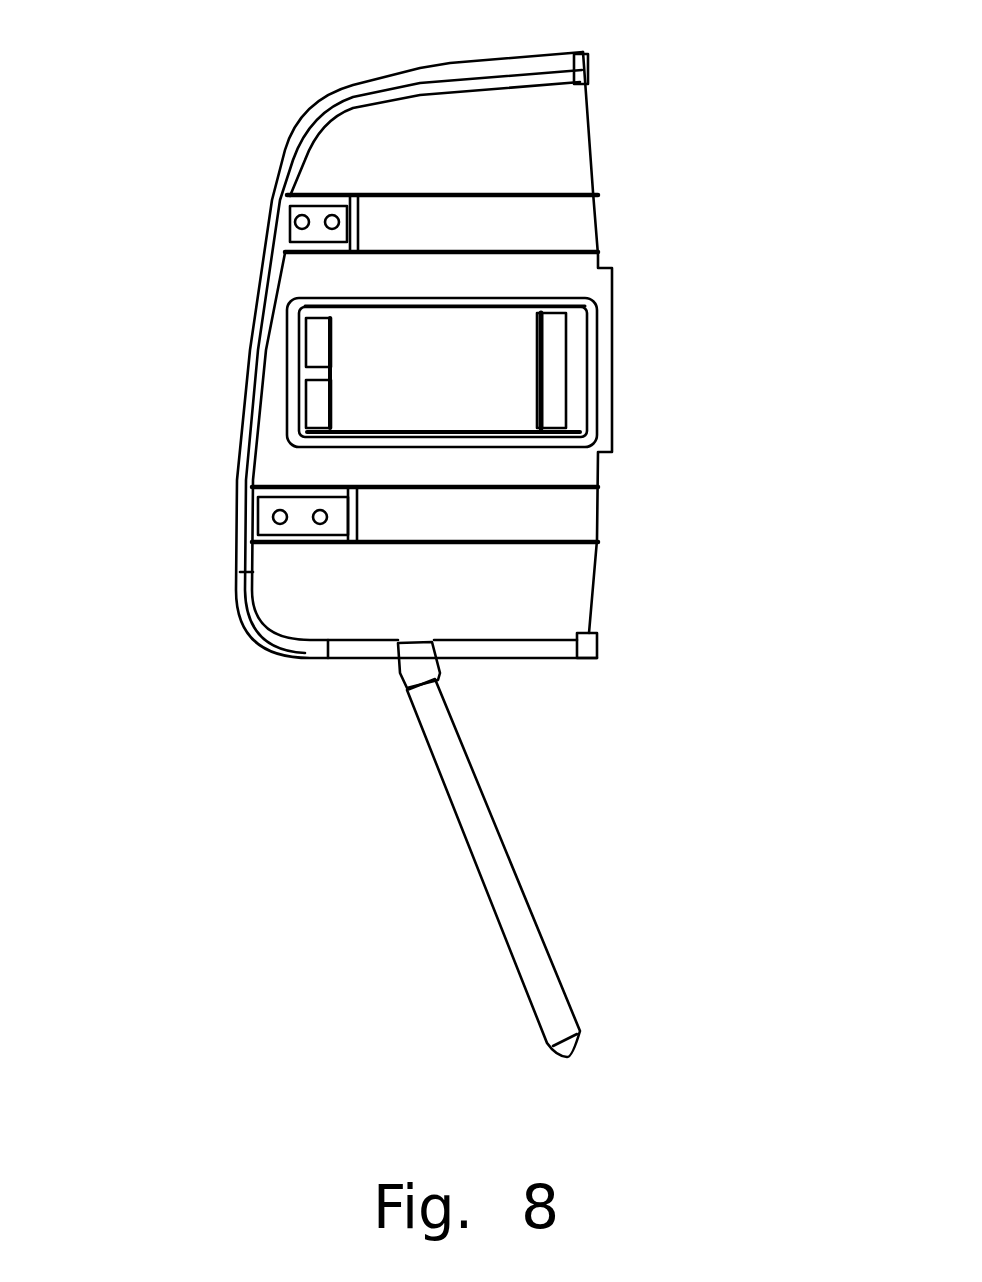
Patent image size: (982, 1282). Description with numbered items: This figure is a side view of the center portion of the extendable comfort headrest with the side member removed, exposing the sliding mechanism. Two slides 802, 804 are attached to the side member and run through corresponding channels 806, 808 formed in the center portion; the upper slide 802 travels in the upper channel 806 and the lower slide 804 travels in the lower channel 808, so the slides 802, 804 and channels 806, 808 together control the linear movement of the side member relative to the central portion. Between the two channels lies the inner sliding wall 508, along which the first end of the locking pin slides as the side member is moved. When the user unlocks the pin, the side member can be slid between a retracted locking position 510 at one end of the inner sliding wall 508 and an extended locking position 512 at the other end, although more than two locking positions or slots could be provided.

The inner sliding wall 508 is at (453, 352).
The retracted locking position 510 is at (313, 337).
The extended locking position 512 is at (558, 337).
The slide 802 is at (292, 220).
The slide 804 is at (263, 517).
The channel 806 is at (558, 220).
The channel 808 is at (565, 515).